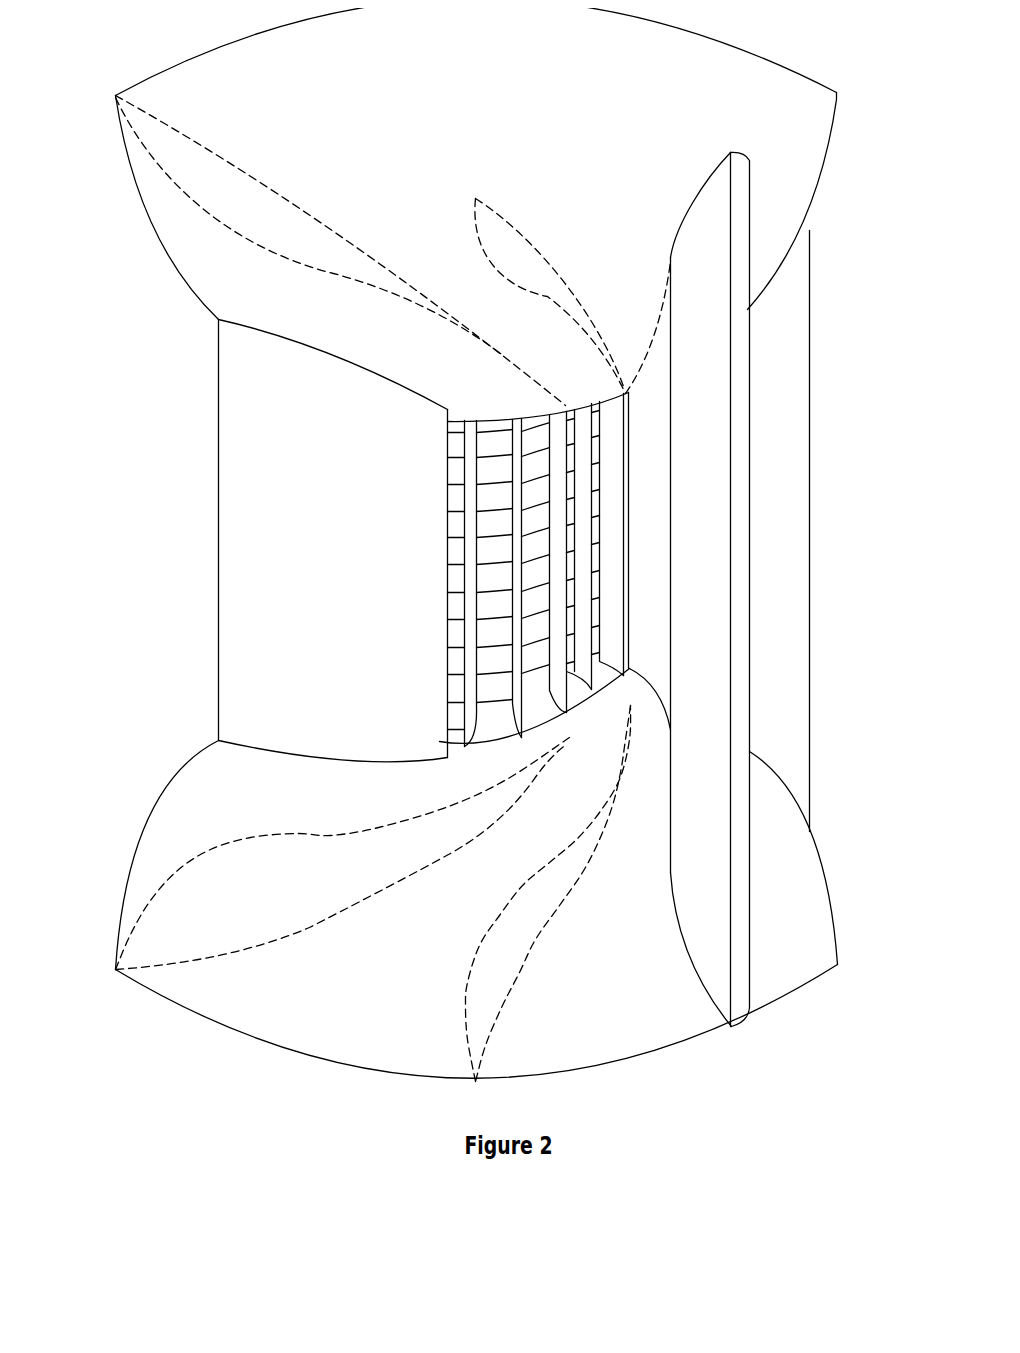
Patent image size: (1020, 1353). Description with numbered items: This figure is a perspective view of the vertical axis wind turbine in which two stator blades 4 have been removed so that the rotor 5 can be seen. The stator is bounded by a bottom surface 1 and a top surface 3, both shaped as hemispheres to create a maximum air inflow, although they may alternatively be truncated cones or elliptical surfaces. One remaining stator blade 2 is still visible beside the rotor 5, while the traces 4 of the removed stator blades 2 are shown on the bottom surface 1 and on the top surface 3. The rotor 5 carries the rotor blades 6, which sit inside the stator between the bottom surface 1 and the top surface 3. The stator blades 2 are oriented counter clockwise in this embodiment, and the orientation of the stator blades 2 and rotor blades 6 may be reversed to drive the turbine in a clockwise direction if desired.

The bottom surface 1 is at (780, 935).
The stator blades 2 is at (355, 633).
The top surface 3 is at (779, 164).
The traces of the removed stator blades 4 is at (511, 996).
The rotor 5 is at (537, 538).
The rotor blades 6 is at (613, 442).